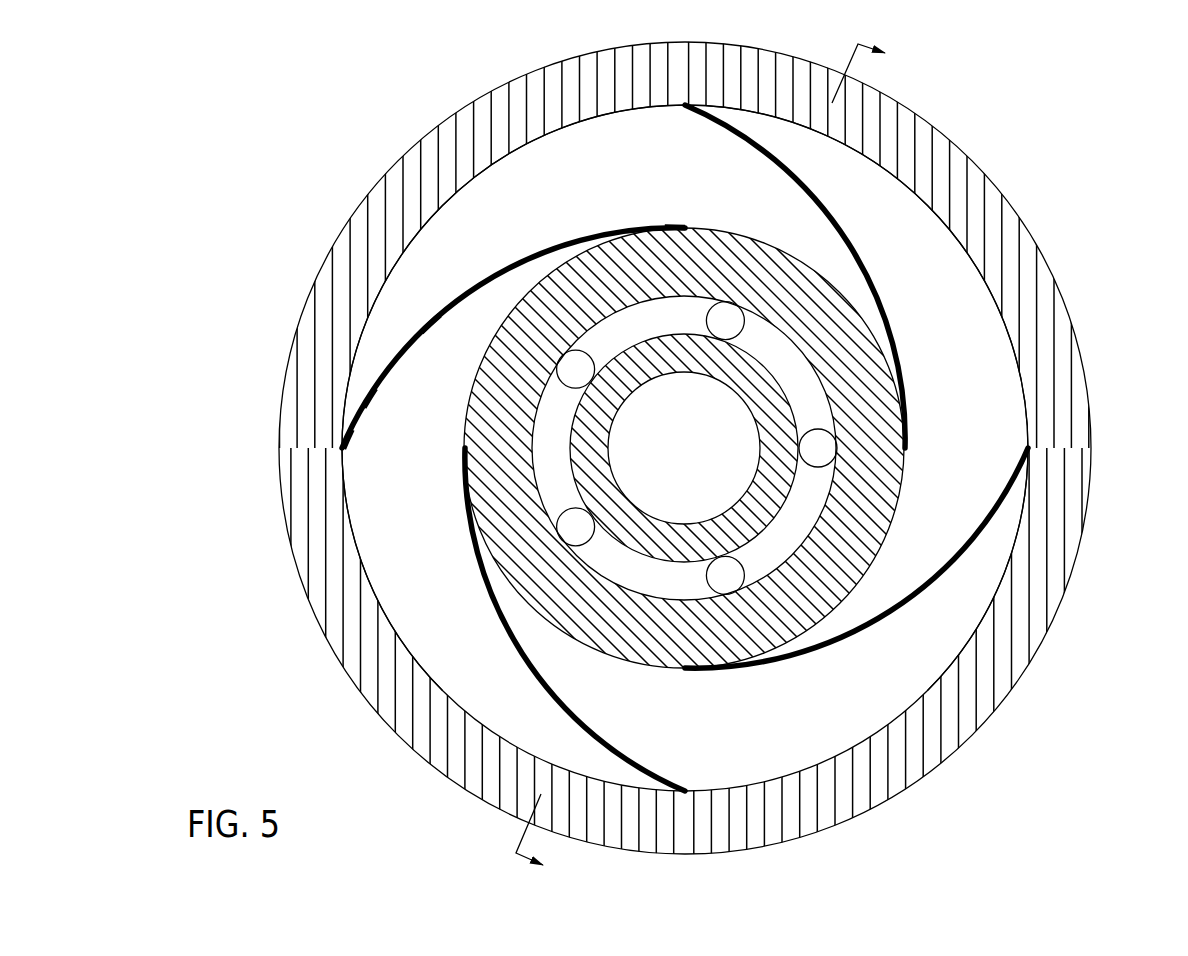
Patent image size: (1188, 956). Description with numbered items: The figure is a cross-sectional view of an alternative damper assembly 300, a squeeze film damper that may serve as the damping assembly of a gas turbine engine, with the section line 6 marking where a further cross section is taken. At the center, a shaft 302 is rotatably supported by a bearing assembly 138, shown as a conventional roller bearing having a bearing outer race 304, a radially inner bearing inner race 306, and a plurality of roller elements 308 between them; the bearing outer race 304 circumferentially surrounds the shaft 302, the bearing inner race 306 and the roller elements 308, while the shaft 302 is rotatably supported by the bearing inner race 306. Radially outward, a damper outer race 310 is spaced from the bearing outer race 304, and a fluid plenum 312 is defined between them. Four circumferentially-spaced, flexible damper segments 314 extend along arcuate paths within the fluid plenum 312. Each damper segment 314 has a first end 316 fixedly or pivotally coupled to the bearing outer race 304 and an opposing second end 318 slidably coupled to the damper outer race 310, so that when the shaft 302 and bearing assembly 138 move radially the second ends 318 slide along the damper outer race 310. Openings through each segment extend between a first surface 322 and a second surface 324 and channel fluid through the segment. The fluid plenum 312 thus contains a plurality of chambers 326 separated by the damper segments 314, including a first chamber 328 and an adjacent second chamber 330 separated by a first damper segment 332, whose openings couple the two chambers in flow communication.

The damper assembly 300 is at (286, 104).
The shaft 302 is at (918, 562).
The bearing outer race 304 is at (874, 403).
The bearing inner race 306 is at (691, 541).
The roller elements 308 is at (578, 527).
The damper outer race 310 is at (894, 768).
The fluid plenum 312 is at (962, 457).
The damper segments 314 is at (838, 215).
The first end 316 is at (342, 448).
The second end 318 is at (685, 226).
The first surface 322 is at (370, 402).
The second surface 324 is at (424, 322).
The chambers 326 is at (668, 156).
The first chamber 328 is at (400, 562).
The second chamber 330 is at (512, 206).
The first damper segment 332 is at (393, 358).
The bearing assembly 138 is at (517, 573).
The section line 6- 6 is at (709, 464).